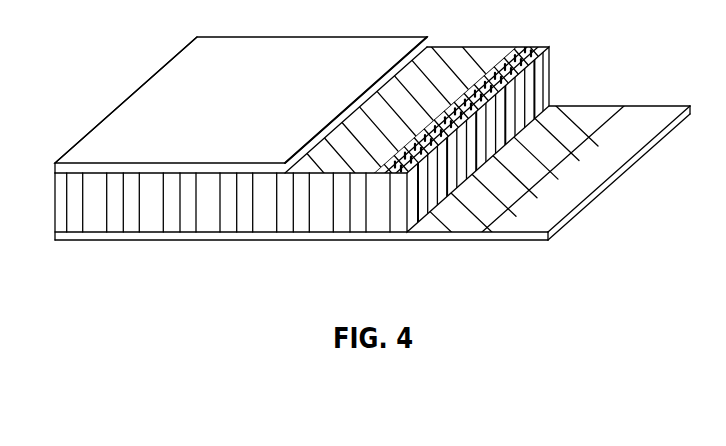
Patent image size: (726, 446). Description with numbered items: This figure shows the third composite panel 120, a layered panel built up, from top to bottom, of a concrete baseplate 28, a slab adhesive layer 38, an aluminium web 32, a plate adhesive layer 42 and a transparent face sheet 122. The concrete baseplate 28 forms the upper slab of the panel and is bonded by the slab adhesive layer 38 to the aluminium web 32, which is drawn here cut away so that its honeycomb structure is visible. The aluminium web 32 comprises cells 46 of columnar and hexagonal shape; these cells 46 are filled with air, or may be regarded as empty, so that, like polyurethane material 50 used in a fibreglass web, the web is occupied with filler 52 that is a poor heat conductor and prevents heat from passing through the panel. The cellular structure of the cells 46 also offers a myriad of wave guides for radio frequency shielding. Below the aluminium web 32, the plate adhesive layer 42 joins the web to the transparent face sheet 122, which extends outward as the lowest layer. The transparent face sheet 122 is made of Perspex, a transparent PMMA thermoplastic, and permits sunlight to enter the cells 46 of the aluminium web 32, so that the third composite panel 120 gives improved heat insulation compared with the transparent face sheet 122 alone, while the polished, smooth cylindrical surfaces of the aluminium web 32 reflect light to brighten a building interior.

The concrete baseplate 28 is at (260, 110).
The slab adhesive layer 38 is at (344, 124).
The aluminium web 32 is at (466, 101).
The cells 46 is at (507, 47).
The polyurethane material 50 is at (519, 135).
The filler 52 is at (551, 46).
The plate adhesive layer 42 is at (588, 105).
The third composite panel 120 is at (136, 90).
The transparent face sheet 122 is at (614, 175).